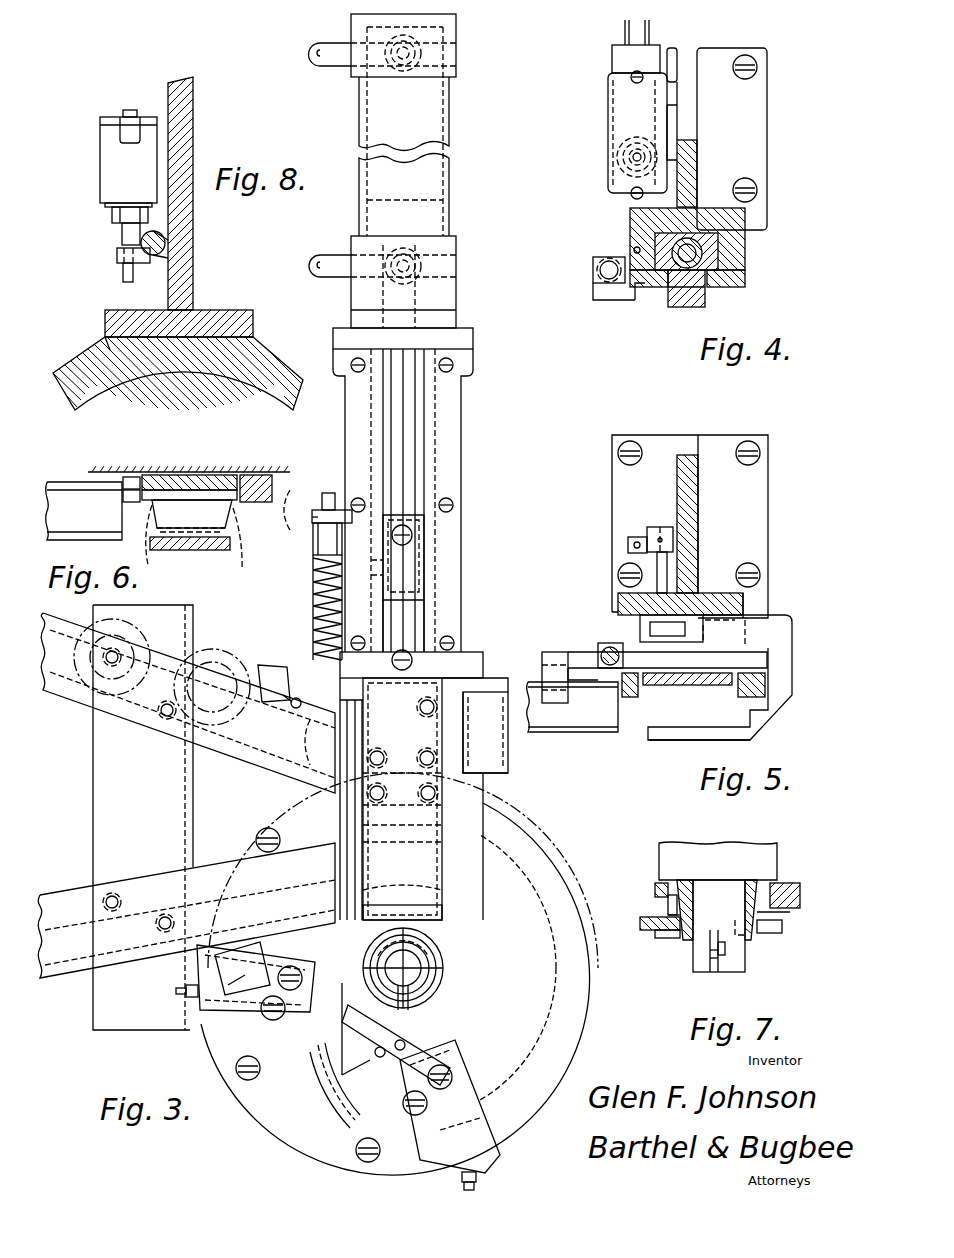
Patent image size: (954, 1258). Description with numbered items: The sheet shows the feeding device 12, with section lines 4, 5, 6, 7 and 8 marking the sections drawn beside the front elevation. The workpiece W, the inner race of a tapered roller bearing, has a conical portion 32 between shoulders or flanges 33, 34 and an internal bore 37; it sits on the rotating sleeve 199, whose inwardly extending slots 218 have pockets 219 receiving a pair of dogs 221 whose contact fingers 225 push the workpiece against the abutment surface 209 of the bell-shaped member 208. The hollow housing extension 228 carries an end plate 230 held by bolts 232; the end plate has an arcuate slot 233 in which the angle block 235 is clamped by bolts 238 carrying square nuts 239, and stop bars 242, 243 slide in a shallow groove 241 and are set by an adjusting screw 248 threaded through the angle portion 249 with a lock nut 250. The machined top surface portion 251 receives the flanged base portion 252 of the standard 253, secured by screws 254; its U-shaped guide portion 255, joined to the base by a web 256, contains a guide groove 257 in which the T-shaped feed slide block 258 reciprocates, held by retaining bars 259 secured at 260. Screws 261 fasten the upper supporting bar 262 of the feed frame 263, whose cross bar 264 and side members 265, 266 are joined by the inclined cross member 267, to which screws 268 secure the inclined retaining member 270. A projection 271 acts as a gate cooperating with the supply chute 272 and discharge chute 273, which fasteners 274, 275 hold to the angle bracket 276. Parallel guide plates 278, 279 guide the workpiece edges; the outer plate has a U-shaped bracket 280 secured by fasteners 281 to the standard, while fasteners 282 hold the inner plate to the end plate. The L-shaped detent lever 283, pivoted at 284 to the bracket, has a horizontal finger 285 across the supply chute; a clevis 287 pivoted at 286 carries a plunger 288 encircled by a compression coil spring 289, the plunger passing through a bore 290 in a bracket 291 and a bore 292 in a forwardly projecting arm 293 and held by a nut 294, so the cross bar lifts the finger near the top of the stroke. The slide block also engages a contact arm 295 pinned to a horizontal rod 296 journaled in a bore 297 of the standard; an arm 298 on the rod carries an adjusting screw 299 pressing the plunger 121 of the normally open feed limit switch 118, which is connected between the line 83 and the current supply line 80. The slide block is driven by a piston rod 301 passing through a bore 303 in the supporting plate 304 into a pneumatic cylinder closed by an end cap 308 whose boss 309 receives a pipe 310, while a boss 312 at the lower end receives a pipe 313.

In FIG. 3, the feeding device 12 is at (458, 313).
In FIG. 6, the conical portion 32 is at (139, 535).
In FIG. 7, the conical portion 32 is at (668, 913).
In FIG. 3, the shoulder or flange 33 is at (437, 968).
In FIG. 6, the shoulder or flange 33 is at (230, 505).
In FIG. 7, the shoulder or flange 33 is at (668, 900).
In FIG. 3, the shoulder or flange 34 is at (388, 1003).
In FIG. 6, the shoulder or flange 34 is at (148, 573).
In FIG. 7, the shoulder or flange 34 is at (676, 940).
In FIG. 7, the internal bore 37 is at (760, 933).
In FIG. 4, the current supply line 80 is at (623, 35).
In FIG. 4, the line 83 is at (651, 25).
In FIG. 4, the feed limit switch 118 is at (607, 118).
In FIG. 8, the feed limit switch 118 is at (100, 181).
In FIG. 4, the plunger 121 is at (622, 162).
In FIG. 8, the plunger 121 is at (121, 240).
In FIG. 3, the sleeve 199 is at (420, 960).
In FIG. 7, the sleeve 199 is at (740, 965).
In FIG. 7, the bell-shaped member 208 is at (657, 855).
In FIG. 7, the outer annular abutment surface 209 is at (760, 878).
In FIG. 7, the slots 218 is at (714, 965).
In FIG. 7, the pockets or alcoves 219 is at (726, 950).
In FIG. 3, the dogs 221 is at (430, 950).
In FIG. 7, the contact fingers 225 is at (710, 952).
In FIG. 8, the housing extension 228 is at (215, 372).
In FIG. 3, the end plate 230 is at (317, 1140).
In FIG. 3, the bolts 232 is at (255, 832).
In FIG. 3, the arcuate slot 233 is at (335, 1092).
In FIG. 3, the angle block 235 is at (205, 1005).
In FIG. 3, the clamping bolts 238 is at (292, 966).
In FIG. 3, the square nuts 239 is at (300, 1060).
In FIG. 3, the shallow groove 241 is at (238, 960).
In FIG. 3, the stop bar 242 is at (244, 980).
In FIG. 7, the stop bar 242 is at (640, 922).
In FIG. 3, the stop bar 243 is at (488, 1140).
In FIG. 7, the stop bar 243 is at (770, 933).
In FIG. 3, the adjusting screw 248 is at (176, 991).
In FIG. 3, the angle portion 249 is at (190, 1003).
In FIG. 3, the lock nut 250 is at (192, 980).
In FIG. 8, the top surface portion 251 is at (170, 375).
In FIG. 4, the flanged base portion 252 is at (748, 110).
In FIG. 5, the flanged base portion 252 is at (748, 518).
In FIG. 8, the flanged base portion 252 is at (230, 315).
In FIG. 4, the standard 253 is at (769, 140).
In FIG. 5, the standard 253 is at (705, 600).
In FIG. 4, the screws 254 is at (757, 65).
In FIG. 5, the screws 254 is at (618, 453).
In FIG. 4, the guide portion 255 is at (747, 220).
In FIG. 5, the guide portion 255 is at (745, 605).
In FIG. 4, the rib or web 256 is at (692, 148).
In FIG. 5, the rib or web 256 is at (698, 478).
In FIG. 8, the rib or web 256 is at (183, 133).
In FIG. 4, the guide groove 257 is at (720, 243).
In FIG. 4, the feed slide block 258 is at (700, 210).
In FIG. 3, the retaining bars 259 is at (355, 437).
In FIG. 4, the retaining bars 259 is at (645, 288).
In FIG. 3, the fastenings 260 is at (352, 370).
In FIG. 4, the fastenings 260 is at (630, 250).
In FIG. 3, the screws 261 is at (410, 540).
In FIG. 4, the screws 261 is at (690, 300).
In FIG. 3, the upper supporting bar 262 is at (412, 605).
In FIG. 4, the upper supporting bar 262 is at (680, 308).
In FIG. 3, the feed frame 263 is at (482, 653).
In FIG. 3, the cross bar 264 is at (445, 665).
In FIG. 5, the side member 265 is at (630, 698).
In FIG. 6, the side member 265 is at (133, 477).
In FIG. 7, the side member 265 is at (655, 890).
In FIG. 3, the side member 266 is at (490, 805).
In FIG. 5, the side member 266 is at (735, 697).
In FIG. 6, the side member 266 is at (256, 502).
In FIG. 3, the inclined cross member 267 is at (413, 1034).
In FIG. 3, the screws 268 is at (396, 1056).
In FIG. 7, the screws 268 is at (790, 883).
In FIG. 3, the inclined retaining member 270 is at (365, 1068).
In FIG. 7, the inclined retaining member 270 is at (660, 938).
In FIG. 3, the projection 271 is at (347, 895).
In FIG. 6, the projection 271 is at (135, 505).
In FIG. 3, the supply chute 272 is at (250, 765).
In FIG. 5, the supply chute 272 is at (555, 735).
In FIG. 3, the discharge chute 273 is at (135, 965).
In FIG. 6, the discharge chute 273 is at (62, 490).
In FIG. 3, the fasteners 274 is at (160, 715).
In FIG. 3, the fasteners 275 is at (157, 903).
In FIG. 3, the angle bracket 276 is at (95, 840).
In FIG. 3, the guide plate 278 is at (440, 868).
In FIG. 5, the guide plate 278 is at (668, 740).
In FIG. 6, the guide plate 278 is at (190, 550).
In FIG. 3, the guide plate 279 is at (480, 800).
In FIG. 5, the guide plate 279 is at (690, 685).
In FIG. 6, the guide plate 279 is at (200, 475).
In FIG. 3, the U-shaped bracket 280 is at (455, 500).
In FIG. 5, the U-shaped bracket 280 is at (792, 695).
In FIG. 3, the fasteners 281 is at (417, 742).
In FIG. 5, the fasteners 281 is at (729, 632).
In FIG. 3, the fasteners 282 is at (427, 814).
In FIG. 3, the detent lever 283 is at (307, 723).
In FIG. 5, the detent lever 283 is at (580, 650).
In FIG. 3, the pivot 284 is at (495, 692).
In FIG. 5, the pivot 284 is at (770, 652).
In FIG. 3, the horizontal finger 285 is at (268, 668).
In FIG. 5, the horizontal finger 285 is at (540, 668).
In FIG. 3, the pivot 286 is at (296, 745).
In FIG. 3, the clevis 287 is at (300, 695).
In FIG. 5, the clevis 287 is at (584, 671).
In FIG. 3, the plunger 288 is at (318, 597).
In FIG. 4, the plunger 288 is at (593, 272).
In FIG. 5, the plunger 288 is at (608, 643).
In FIG. 3, the compression coil spring 289 is at (312, 580).
In FIG. 5, the compression coil spring 289 is at (598, 668).
In FIG. 3, the bore 290 is at (318, 558).
In FIG. 5, the bore 290 is at (645, 530).
In FIG. 3, the bracket 291 is at (312, 545).
In FIG. 4, the bracket 291 is at (628, 255).
In FIG. 3, the bore 292 is at (280, 510).
In FIG. 3, the forwardly projecting arm 293 is at (330, 510).
In FIG. 4, the forwardly projecting arm 293 is at (604, 298).
In FIG. 3, the nut 294 is at (315, 513).
In FIG. 4, the nut 294 is at (600, 284).
In FIG. 5, the contact arm 295 is at (650, 628).
In FIG. 5, the horizontal rod 296 is at (662, 588).
In FIG. 8, the horizontal rod 296 is at (165, 243).
In FIG. 5, the horizontal bore 297 is at (650, 558).
In FIG. 4, the arm 298 is at (645, 145).
In FIG. 8, the arm 298 is at (117, 257).
In FIG. 4, the adjusting screw 299 is at (630, 172).
In FIG. 5, the adjusting screw 299 is at (627, 545).
In FIG. 8, the adjusting screw 299 is at (125, 280).
In FIG. 3, the piston rod 301 is at (403, 412).
In FIG. 4, the piston rod 301 is at (700, 265).
In FIG. 3, the bore 303 is at (458, 316).
In FIG. 3, the supporting plate 304 is at (475, 340).
In FIG. 3, the end cap 308 is at (456, 67).
In FIG. 3, the boss 309 is at (420, 47).
In FIG. 3, the pipe 310 is at (323, 52).
In FIG. 3, the boss 312 is at (420, 263).
In FIG. 3, the pipe 313 is at (328, 272).
In FIG. 3, the workpiece W is at (440, 942).
In FIG. 6, the workpiece W is at (241, 546).
In FIG. 7, the workpiece W is at (780, 915).
In FIG. 3, the section line 4— 4 is at (521, 517).
In FIG. 3, the section line 5— 5 is at (520, 769).
In FIG. 3, the section line 6— 6 is at (560, 833).
In FIG. 3, the section line 7— 7 is at (500, 977).
In FIG. 4, the section line 8— 8 is at (807, 170).